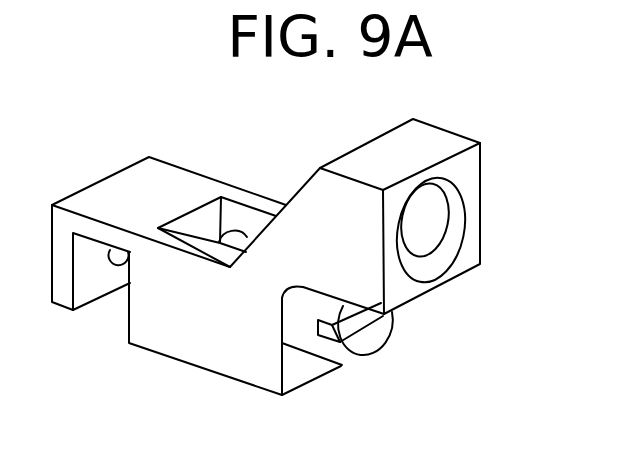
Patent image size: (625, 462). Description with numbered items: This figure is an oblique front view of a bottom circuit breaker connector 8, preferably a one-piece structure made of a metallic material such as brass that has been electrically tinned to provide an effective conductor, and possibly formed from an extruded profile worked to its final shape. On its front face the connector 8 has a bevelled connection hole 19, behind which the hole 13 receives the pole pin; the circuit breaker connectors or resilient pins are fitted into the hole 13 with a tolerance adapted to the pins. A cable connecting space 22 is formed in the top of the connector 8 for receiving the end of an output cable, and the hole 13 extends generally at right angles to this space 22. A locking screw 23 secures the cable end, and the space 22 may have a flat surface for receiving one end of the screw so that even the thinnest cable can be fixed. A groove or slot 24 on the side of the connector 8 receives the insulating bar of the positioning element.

The circuit breaker connector 8 is at (222, 332).
The hole 13 is at (433, 220).
The bevelled connection hole 19 is at (448, 243).
The cable connecting space 22 is at (235, 218).
The locking screw 23 is at (375, 338).
The groove or slot 24 is at (113, 313).